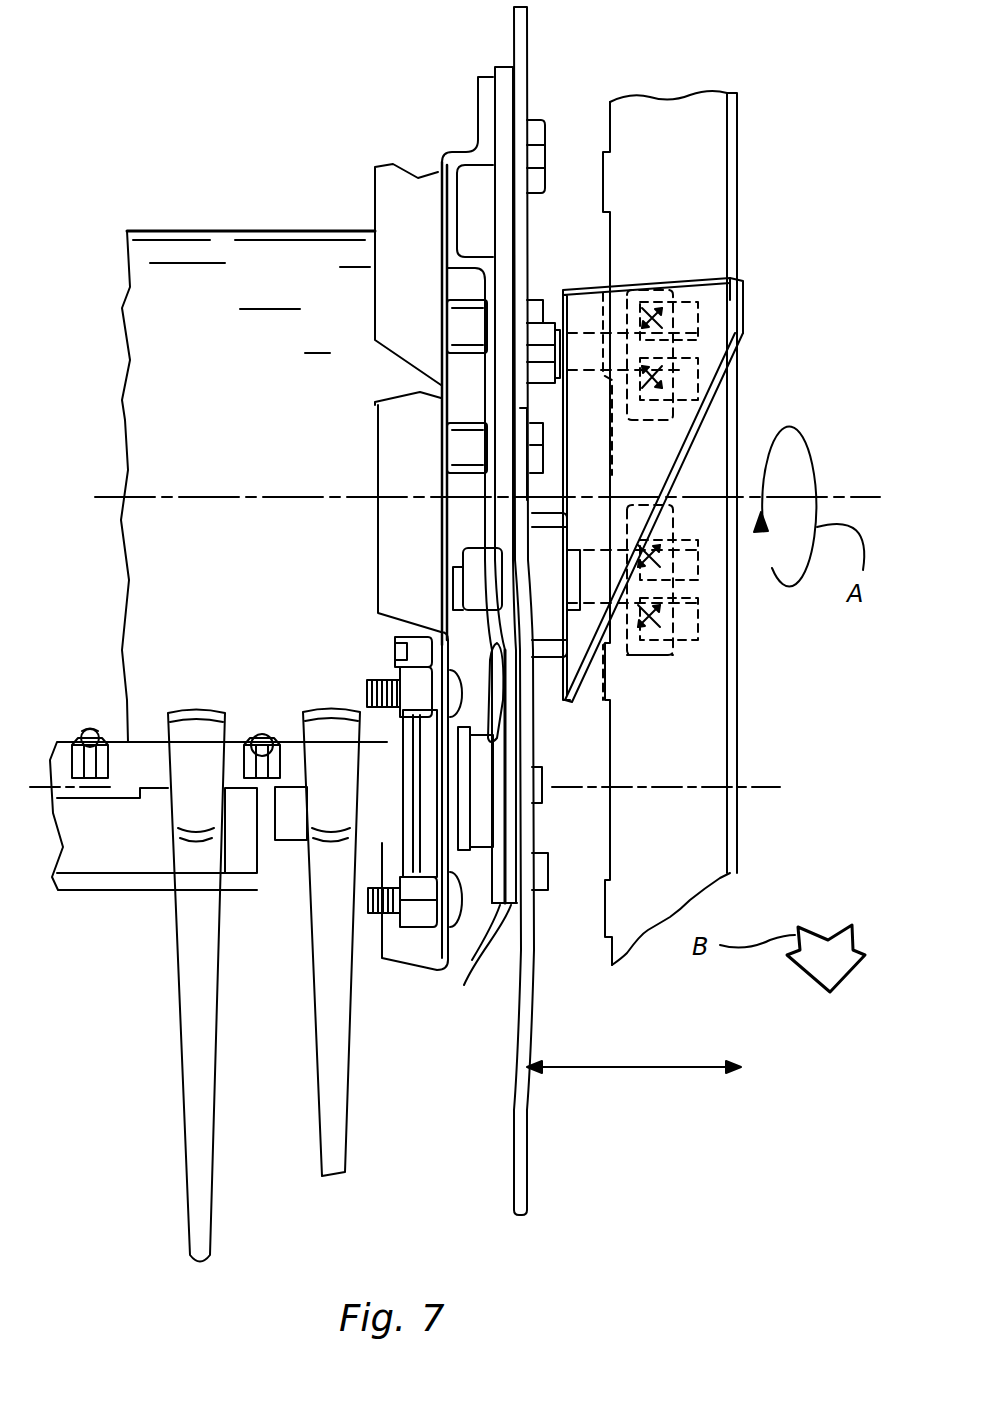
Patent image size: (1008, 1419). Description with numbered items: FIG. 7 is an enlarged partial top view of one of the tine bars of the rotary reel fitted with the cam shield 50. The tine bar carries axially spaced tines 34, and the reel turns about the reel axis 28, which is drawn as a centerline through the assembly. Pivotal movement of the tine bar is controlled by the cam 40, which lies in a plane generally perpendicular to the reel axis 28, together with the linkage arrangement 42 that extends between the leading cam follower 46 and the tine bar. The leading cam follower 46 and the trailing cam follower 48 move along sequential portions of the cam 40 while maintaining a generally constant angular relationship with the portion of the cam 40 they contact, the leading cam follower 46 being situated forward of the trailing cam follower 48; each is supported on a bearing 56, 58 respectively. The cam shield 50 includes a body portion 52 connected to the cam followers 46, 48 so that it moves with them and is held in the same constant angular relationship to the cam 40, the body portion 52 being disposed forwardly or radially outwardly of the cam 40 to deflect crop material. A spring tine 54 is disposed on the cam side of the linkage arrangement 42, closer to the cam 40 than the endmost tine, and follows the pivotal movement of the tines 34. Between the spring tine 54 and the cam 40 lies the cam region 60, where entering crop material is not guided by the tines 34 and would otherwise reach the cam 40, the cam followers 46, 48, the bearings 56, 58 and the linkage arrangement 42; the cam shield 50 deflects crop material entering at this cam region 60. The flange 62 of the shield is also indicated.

The reel axis 28 is at (864, 497).
The tines 34 is at (188, 1102).
The cam 40 is at (737, 157).
The linkage arrangement 42 is at (505, 907).
The leading cam follower 46 is at (650, 657).
The trailing cam follower 48 is at (678, 290).
The cam shield 50 is at (749, 278).
The body portion 52 is at (650, 433).
The spring tine 54 is at (527, 1140).
The bearing 56 is at (660, 633).
The bearing 58 is at (663, 318).
The cam region 60 is at (627, 1067).
The angled flange 62 is at (692, 460).